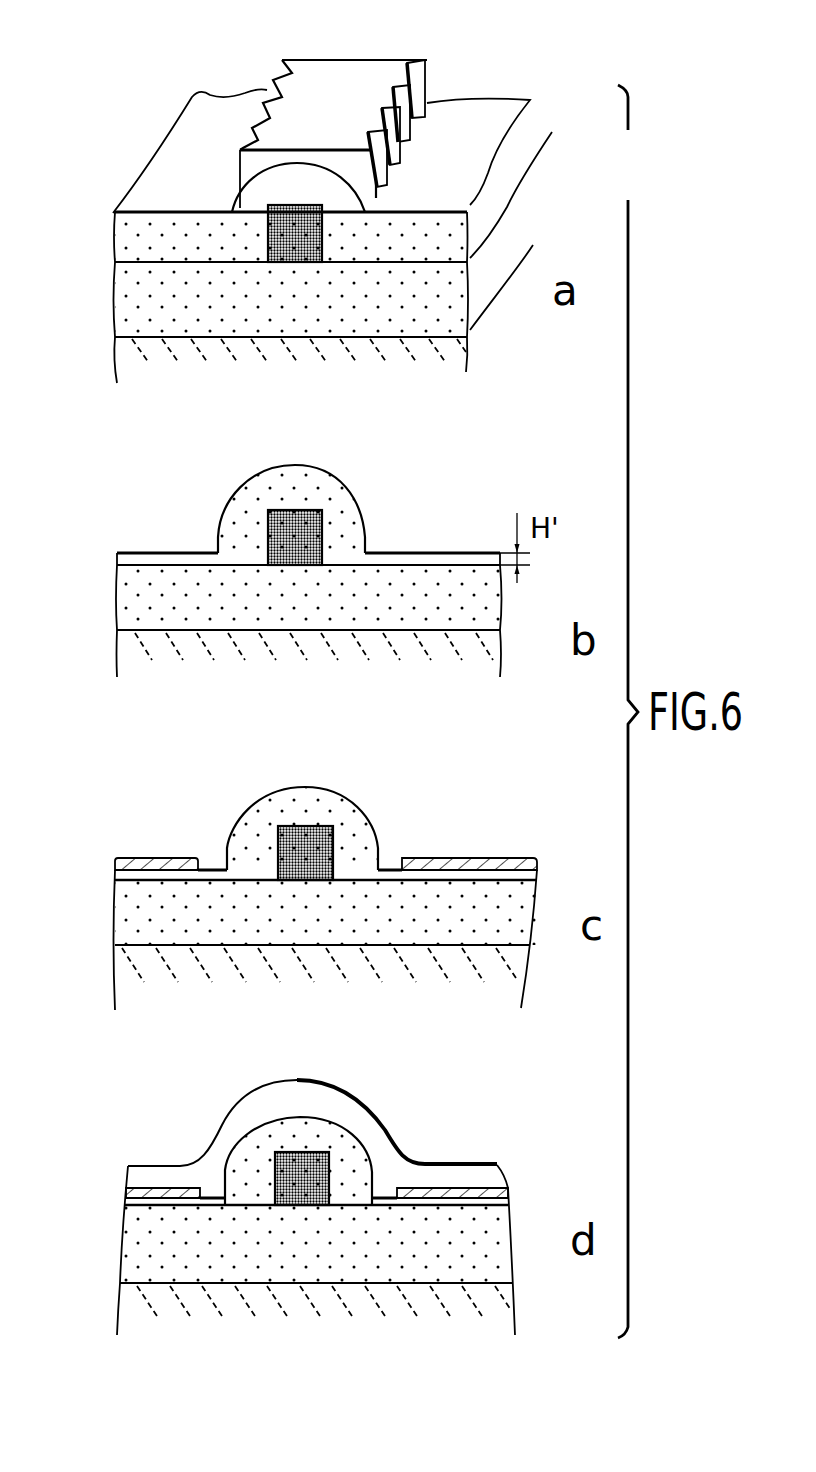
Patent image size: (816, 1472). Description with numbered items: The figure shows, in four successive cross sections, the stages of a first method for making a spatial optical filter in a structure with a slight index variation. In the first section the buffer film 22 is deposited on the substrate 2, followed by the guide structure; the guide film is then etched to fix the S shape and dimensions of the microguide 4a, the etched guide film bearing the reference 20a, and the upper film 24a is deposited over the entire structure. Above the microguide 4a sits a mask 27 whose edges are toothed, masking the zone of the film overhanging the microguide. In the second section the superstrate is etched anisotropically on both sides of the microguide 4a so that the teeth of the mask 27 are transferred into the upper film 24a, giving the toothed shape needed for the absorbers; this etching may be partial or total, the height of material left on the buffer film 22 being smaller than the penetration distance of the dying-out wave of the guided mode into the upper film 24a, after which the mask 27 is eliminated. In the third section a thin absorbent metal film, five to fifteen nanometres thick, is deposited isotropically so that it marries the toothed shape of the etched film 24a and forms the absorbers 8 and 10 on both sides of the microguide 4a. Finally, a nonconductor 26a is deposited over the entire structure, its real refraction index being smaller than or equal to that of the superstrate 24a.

The substrate 2 is at (118, 385).
The buffer film 22 is at (120, 298).
The etched guide film 20a is at (353, 214).
The upper film 24a is at (345, 192).
The microguide 4a is at (253, 240).
The mask 27 is at (370, 78).
The absorber 8 is at (165, 858).
The absorber 10 is at (472, 858).
The nonconductor 26a is at (228, 1131).